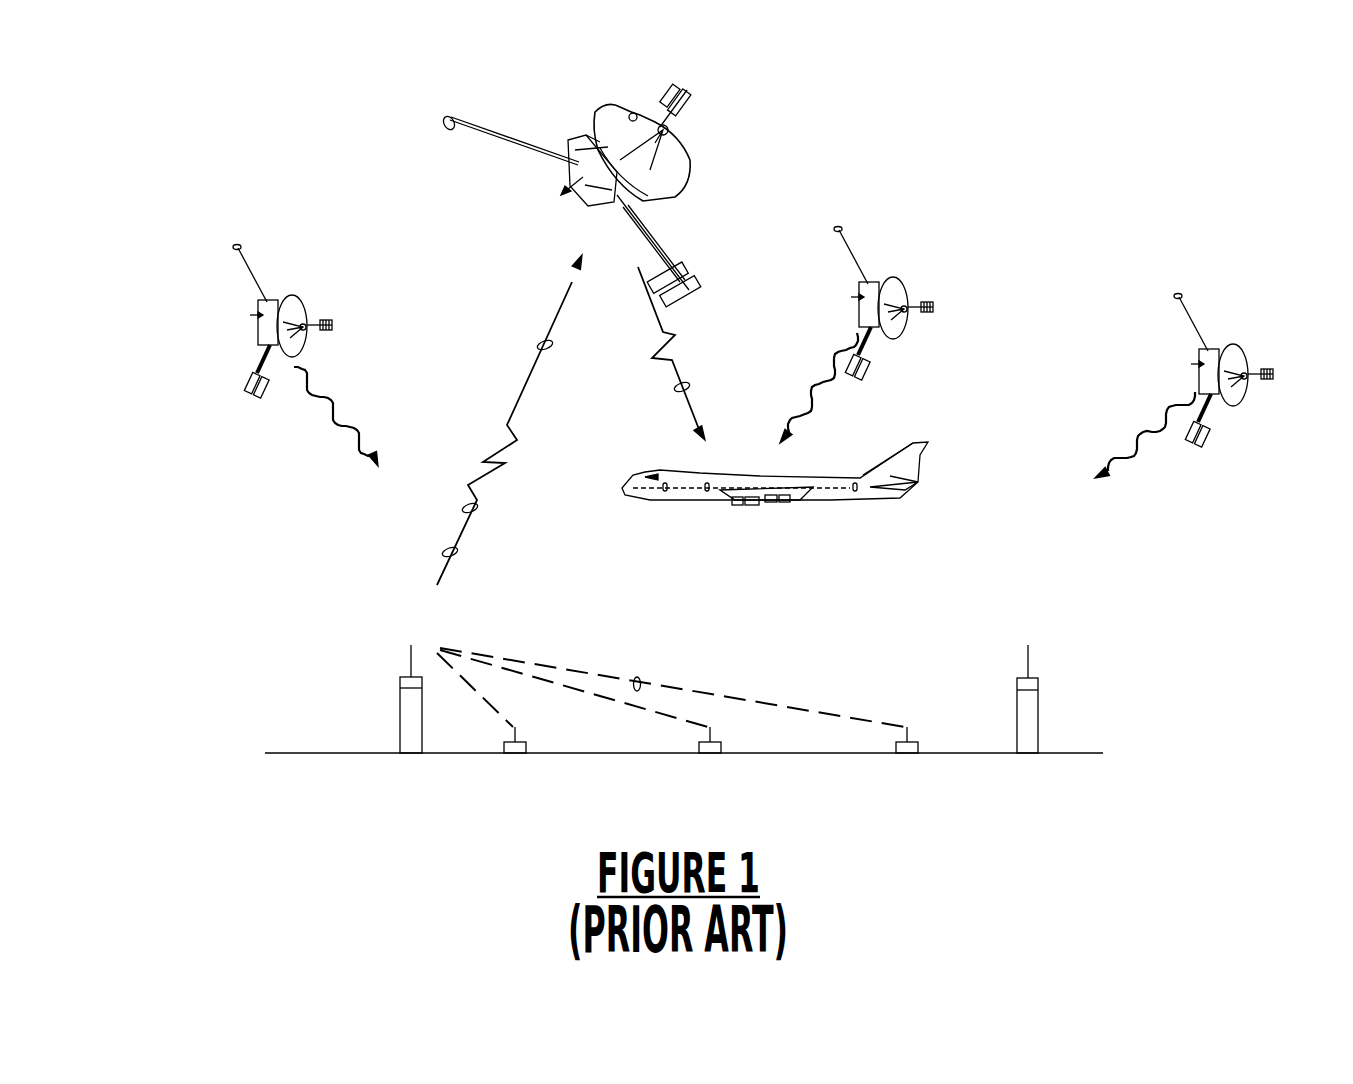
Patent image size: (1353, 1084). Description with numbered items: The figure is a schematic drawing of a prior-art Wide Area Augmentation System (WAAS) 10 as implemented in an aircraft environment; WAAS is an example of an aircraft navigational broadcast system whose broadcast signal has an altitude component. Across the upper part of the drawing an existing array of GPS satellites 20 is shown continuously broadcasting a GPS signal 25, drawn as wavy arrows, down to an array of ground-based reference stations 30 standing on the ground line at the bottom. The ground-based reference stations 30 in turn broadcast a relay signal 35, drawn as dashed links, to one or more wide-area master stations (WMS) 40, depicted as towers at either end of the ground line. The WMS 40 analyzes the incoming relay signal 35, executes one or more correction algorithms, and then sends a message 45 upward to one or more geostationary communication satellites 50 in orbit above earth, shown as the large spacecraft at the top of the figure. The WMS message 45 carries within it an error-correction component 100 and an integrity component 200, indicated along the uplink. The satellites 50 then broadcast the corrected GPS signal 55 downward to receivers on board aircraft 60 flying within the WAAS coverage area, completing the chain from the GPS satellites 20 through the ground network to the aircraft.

The Wide Area Augmentation System (WAAS) 10 is at (1008, 105).
The GPS satellites 20 is at (238, 300).
The GPS signal 25 is at (1158, 435).
The ground-based reference stations 30 is at (533, 716).
The relay signal 35 is at (637, 677).
The wide-area master station (WMS) 40 is at (432, 648).
The WMS message 45 is at (545, 340).
The geostationary communication satellites 50 is at (700, 128).
The corrected GPS signal 55 is at (685, 380).
The aircraft 60 is at (725, 535).
The error-correction component 100 is at (468, 505).
The integrity component 200 is at (449, 550).